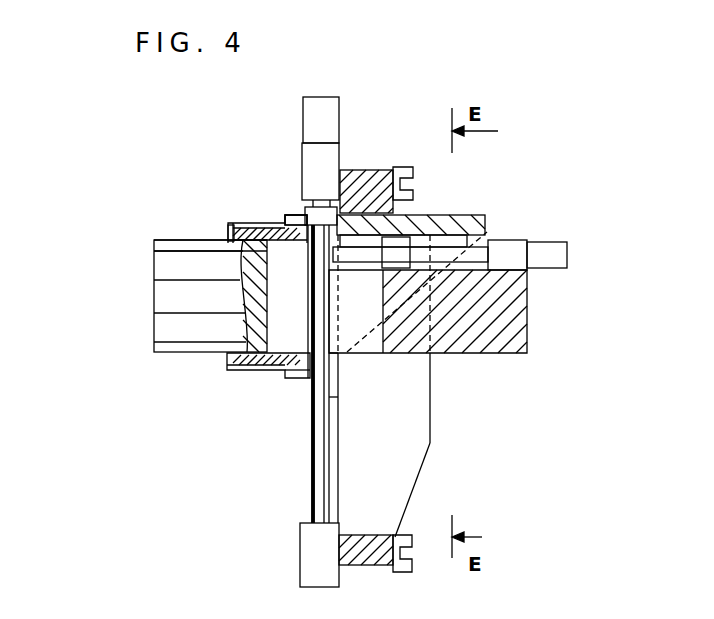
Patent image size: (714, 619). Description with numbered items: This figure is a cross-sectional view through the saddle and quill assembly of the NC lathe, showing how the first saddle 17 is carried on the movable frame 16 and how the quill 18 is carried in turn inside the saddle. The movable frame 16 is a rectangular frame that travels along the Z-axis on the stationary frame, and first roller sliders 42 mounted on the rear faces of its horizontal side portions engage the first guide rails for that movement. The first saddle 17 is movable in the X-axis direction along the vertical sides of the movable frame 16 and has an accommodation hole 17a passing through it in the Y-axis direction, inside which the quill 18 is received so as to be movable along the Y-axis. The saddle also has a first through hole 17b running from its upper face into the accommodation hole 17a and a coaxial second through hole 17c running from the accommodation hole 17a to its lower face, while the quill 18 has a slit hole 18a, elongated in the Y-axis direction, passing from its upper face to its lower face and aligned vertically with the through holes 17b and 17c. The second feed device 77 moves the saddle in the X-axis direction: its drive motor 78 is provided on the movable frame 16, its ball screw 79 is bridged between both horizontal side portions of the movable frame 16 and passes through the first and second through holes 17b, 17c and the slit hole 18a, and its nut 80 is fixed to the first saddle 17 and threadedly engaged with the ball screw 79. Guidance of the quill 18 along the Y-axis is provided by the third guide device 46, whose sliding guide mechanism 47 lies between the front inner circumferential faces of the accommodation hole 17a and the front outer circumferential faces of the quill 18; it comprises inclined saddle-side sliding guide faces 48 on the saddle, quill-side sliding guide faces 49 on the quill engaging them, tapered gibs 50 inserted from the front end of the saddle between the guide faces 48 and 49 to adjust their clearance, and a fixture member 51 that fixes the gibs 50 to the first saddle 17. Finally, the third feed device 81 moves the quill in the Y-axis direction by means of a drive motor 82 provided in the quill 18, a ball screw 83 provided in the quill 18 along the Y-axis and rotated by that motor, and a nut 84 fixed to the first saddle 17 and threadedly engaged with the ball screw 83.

The movable frame 16 is at (430, 400).
The first saddle 17 is at (482, 219).
The accommodation hole 17a is at (348, 350).
The first through hole 17b is at (318, 240).
The second through hole 17c is at (310, 380).
The quill 18 is at (155, 296).
The slit hole 18a is at (267, 360).
The first roller slider 42 is at (412, 190).
The third guide device 46 is at (282, 171).
The sliding guide mechanism 47 is at (271, 226).
The saddle-side sliding guide face 48 is at (250, 248).
The quill-side sliding guide face 49 is at (175, 239).
The gib 50 is at (243, 228).
The fixture member 51 is at (229, 239).
The second feed device 77 is at (304, 464).
The drive motor 78 is at (335, 122).
The ball screw 79 is at (313, 432).
The nut 80 is at (340, 211).
The third feed device 81 is at (555, 216).
The drive motor 82 is at (548, 246).
The ball screw 83 is at (482, 248).
The nut 84 is at (395, 258).